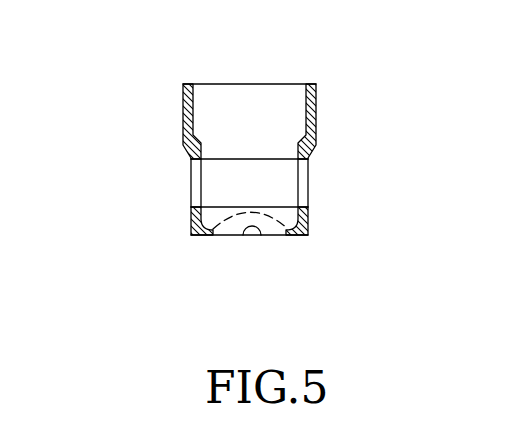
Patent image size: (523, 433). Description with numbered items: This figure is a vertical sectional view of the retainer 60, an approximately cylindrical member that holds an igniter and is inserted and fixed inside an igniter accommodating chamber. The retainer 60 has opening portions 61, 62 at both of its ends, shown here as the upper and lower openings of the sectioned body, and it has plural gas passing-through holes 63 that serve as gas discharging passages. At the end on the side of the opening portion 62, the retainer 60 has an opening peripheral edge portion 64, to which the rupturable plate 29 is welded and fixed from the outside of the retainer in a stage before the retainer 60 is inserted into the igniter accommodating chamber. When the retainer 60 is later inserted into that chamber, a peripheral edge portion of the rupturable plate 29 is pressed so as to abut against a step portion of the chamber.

The retainer 60 is at (216, 167).
The opening portion 61 is at (257, 85).
The opening portion 62 is at (265, 238).
The gas passing-through hole 63 is at (191, 175).
The opening peripheral edge portion 64 is at (309, 223).
The rupturable plate 29 is at (220, 236).